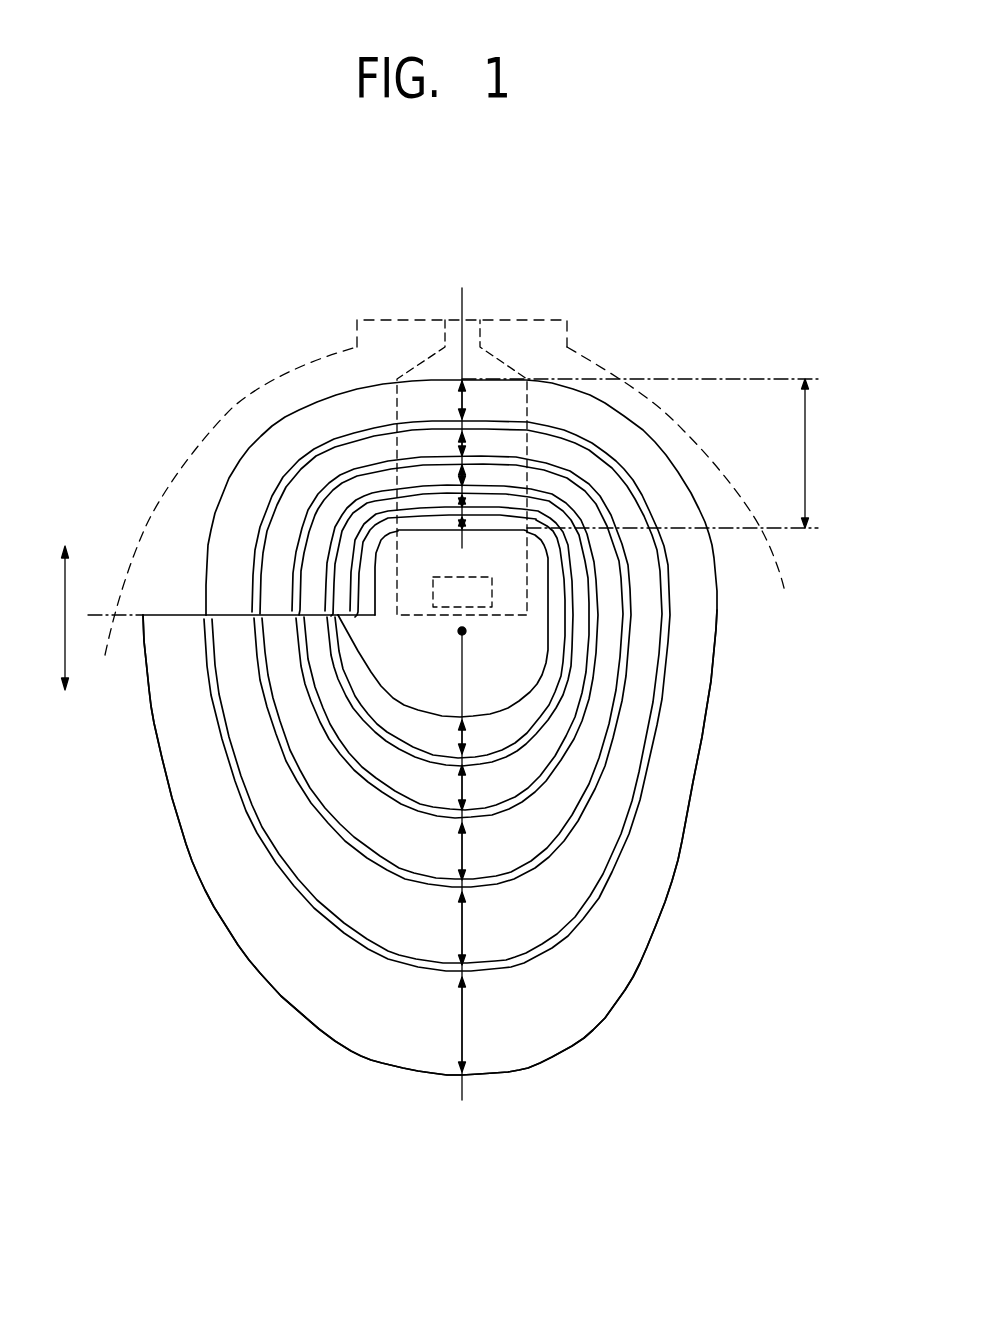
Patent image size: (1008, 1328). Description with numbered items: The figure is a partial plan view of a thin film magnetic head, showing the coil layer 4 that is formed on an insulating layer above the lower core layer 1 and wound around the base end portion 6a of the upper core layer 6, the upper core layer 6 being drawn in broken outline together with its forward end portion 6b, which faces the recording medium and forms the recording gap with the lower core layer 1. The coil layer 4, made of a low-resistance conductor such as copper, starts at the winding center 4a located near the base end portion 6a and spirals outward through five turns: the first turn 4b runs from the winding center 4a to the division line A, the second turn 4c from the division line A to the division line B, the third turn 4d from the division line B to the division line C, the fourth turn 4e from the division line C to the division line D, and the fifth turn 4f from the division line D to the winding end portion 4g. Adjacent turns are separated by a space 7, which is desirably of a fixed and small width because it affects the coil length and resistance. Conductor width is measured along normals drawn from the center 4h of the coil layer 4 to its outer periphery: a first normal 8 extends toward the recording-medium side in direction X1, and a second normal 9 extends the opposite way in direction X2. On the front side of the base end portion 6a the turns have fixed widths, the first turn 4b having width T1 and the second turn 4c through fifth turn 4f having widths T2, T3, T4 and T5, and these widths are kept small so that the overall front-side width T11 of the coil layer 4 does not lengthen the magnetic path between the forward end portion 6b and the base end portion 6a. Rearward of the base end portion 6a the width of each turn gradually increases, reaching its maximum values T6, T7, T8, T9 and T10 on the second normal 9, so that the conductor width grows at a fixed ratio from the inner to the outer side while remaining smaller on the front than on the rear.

The lower core layer 1 is at (297, 380).
The coil layer 4 is at (748, 688).
The winding center 4a is at (358, 616).
The first turn 4b is at (393, 720).
The second turn 4c is at (557, 733).
The third turn 4d is at (540, 812).
The fourth turn 4e is at (537, 910).
The fifth turn 4f is at (527, 995).
The winding end portion 4g is at (176, 622).
The center of the coil layer 4h is at (462, 633).
The upper core layer 6 is at (533, 405).
The base end portion 6a is at (490, 592).
The forward end portion 6b is at (498, 322).
The space 7 is at (316, 718).
The first normal 8 is at (463, 296).
The second normal 9 is at (462, 1097).
The width dimension T1 is at (463, 522).
The width dimension T2 is at (462, 499).
The width dimension T3 is at (462, 473).
The width dimension T4 is at (460, 442).
The width dimension T5 is at (445, 399).
The conductor width T6 is at (443, 734).
The conductor width T7 is at (443, 787).
The conductor width T8 is at (443, 851).
The conductor width T9 is at (443, 928).
The conductor width T10 is at (438, 1024).
The width dimension of the coil layer on the front side T11 is at (663, 453).
The direction X1 is at (62, 596).
The direction X2 is at (62, 711).
The division line A is at (367, 657).
The division line B is at (318, 618).
The division line C is at (278, 618).
The division line D is at (233, 620).